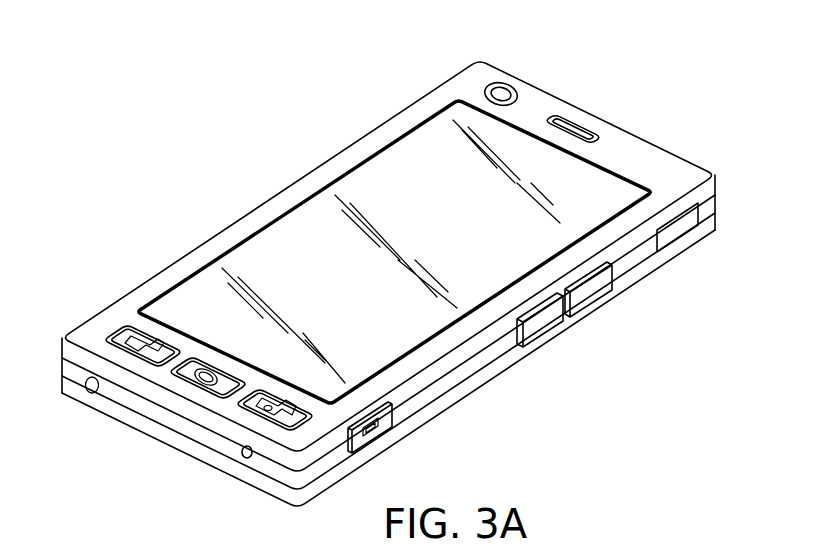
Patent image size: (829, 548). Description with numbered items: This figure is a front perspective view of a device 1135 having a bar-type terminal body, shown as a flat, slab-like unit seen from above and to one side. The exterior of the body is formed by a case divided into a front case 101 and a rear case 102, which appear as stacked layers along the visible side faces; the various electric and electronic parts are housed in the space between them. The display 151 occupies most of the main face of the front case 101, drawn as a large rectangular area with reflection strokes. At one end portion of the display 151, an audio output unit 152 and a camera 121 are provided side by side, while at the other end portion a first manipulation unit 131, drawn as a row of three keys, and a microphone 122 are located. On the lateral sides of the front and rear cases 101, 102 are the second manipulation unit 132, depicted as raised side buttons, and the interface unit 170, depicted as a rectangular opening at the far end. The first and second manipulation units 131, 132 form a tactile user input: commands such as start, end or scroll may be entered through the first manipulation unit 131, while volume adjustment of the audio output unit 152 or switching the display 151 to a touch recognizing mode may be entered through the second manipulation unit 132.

The device 1135 is at (238, 99).
The front case 101 is at (712, 193).
The rear case 102 is at (712, 218).
The camera 121 is at (503, 88).
The microphone 122 is at (247, 458).
The first manipulation unit 131 is at (115, 333).
The second manipulation unit 132 is at (543, 323).
The display 151 is at (313, 215).
The audio output unit 152 is at (575, 118).
The interface unit 170 is at (680, 230).